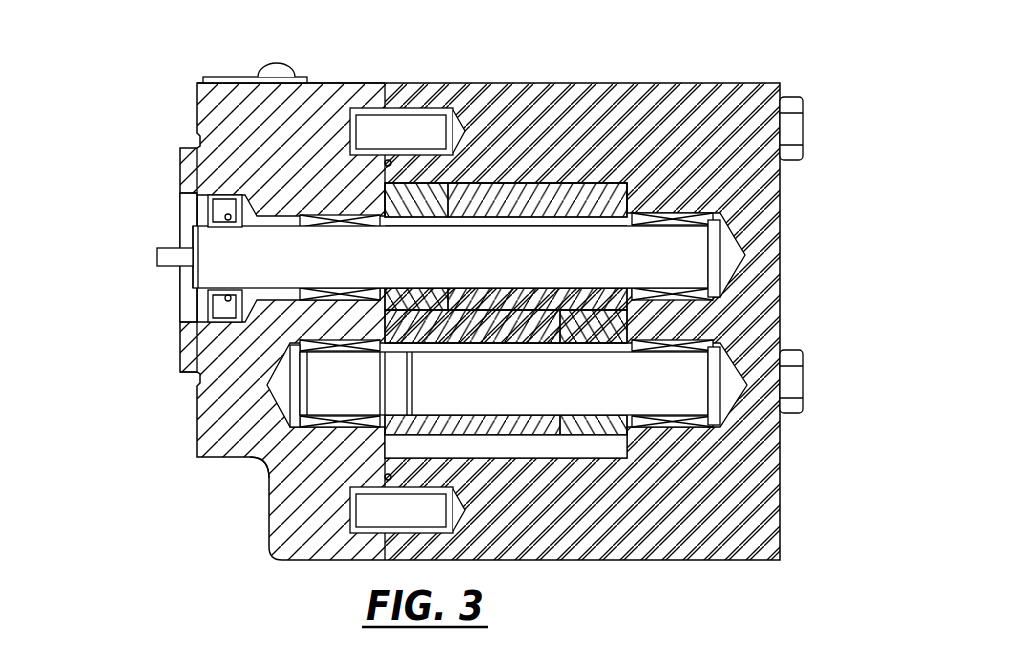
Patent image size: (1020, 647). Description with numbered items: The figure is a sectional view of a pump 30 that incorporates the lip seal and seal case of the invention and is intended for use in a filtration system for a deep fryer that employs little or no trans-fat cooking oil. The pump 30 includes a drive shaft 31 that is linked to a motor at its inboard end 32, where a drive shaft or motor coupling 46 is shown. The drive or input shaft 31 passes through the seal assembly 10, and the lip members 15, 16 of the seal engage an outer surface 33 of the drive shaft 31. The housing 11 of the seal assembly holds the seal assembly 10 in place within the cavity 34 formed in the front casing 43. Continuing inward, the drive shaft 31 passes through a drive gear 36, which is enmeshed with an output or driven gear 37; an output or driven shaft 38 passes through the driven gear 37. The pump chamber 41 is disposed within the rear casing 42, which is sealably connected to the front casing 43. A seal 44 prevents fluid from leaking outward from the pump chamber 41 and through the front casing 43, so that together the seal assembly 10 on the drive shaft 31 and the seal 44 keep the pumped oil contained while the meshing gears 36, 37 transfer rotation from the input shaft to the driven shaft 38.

The seal assembly 10 is at (196, 212).
The housing 11 is at (217, 196).
The lip member 15 is at (217, 297).
The lip member 16 is at (233, 297).
The pump 30 is at (803, 71).
The drive shaft 31 is at (615, 247).
The inboard end 32 is at (193, 277).
The outer surface 33 is at (274, 216).
The cavity 34 is at (198, 312).
The drive gear 36 is at (520, 198).
The driven gear 37 is at (603, 328).
The driven shaft 38 is at (627, 387).
The pump chamber 41 is at (527, 458).
The rear casing 42 is at (622, 80).
The front casing 43 is at (237, 461).
The seal 44 is at (413, 157).
The motor coupling 46 is at (157, 262).